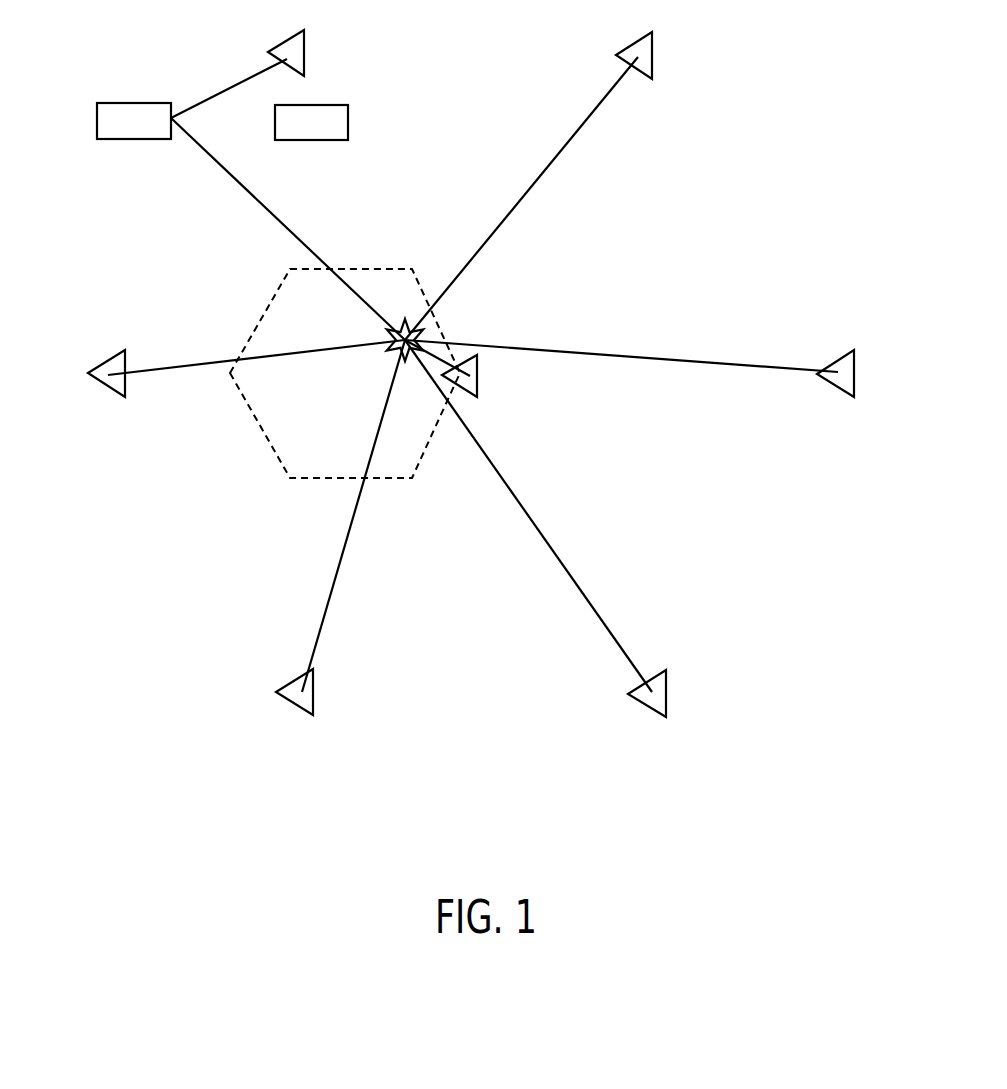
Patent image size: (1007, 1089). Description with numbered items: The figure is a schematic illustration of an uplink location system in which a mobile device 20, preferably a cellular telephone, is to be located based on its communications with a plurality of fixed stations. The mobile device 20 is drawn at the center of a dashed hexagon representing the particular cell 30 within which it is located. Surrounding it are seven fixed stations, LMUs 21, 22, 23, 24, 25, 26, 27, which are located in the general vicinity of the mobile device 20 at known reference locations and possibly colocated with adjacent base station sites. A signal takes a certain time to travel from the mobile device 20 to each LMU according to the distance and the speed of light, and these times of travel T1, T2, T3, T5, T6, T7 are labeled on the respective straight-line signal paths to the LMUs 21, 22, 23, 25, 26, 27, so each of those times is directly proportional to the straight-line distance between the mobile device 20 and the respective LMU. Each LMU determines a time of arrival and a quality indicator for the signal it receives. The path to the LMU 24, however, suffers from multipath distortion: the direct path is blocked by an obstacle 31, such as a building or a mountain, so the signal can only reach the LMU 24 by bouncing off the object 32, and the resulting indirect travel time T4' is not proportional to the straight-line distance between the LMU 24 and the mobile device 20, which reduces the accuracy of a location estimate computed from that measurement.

The mobile device 20 is at (389, 331).
The LMU 21 is at (480, 398).
The LMU 22 is at (853, 349).
The LMU 23 is at (656, 39).
The LMU 24 is at (307, 32).
The LMU 25 is at (87, 372).
The LMU 26 is at (275, 690).
The LMU 27 is at (665, 667).
The cell 30 is at (289, 268).
The obstacle 31 is at (350, 117).
The object 32 is at (95, 115).
The time of travel T1 is at (440, 355).
The time of travel T2 is at (623, 352).
The time of travel T3 is at (588, 115).
The time of travel T4' is at (268, 229).
The time of travel T5 is at (190, 360).
The time of travel T6 is at (327, 595).
The time of travel T7 is at (550, 538).